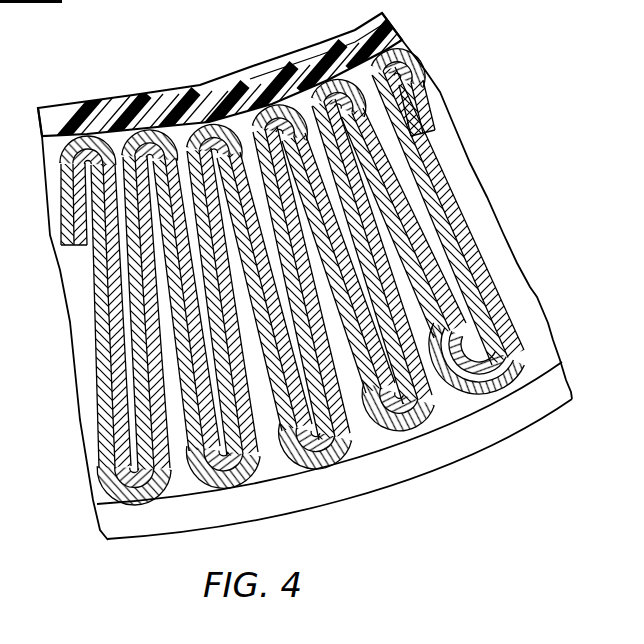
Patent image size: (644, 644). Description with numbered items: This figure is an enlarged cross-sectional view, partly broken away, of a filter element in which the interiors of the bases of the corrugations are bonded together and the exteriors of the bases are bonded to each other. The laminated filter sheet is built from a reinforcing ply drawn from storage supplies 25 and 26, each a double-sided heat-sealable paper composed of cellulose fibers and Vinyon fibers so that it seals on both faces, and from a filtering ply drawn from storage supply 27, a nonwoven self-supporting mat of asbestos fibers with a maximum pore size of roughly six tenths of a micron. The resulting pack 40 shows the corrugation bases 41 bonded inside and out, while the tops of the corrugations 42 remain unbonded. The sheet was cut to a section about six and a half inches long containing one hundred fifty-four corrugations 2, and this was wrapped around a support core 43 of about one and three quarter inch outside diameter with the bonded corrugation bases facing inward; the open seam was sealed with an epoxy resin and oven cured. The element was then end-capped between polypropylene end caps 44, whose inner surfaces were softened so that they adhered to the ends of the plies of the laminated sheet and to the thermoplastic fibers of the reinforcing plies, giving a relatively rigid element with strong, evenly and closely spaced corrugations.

The corrugations 2 is at (88, 420).
The reinforcing ply storage supply 25 is at (93, 335).
The reinforcing ply storage supply 26 is at (439, 220).
The filtering ply storage supply 27 is at (502, 312).
The pack 40 is at (533, 210).
The corrugation bases 41 is at (310, 80).
The tops of the corrugations 42 is at (405, 435).
The support core 43 is at (142, 100).
The end caps 44 is at (158, 524).